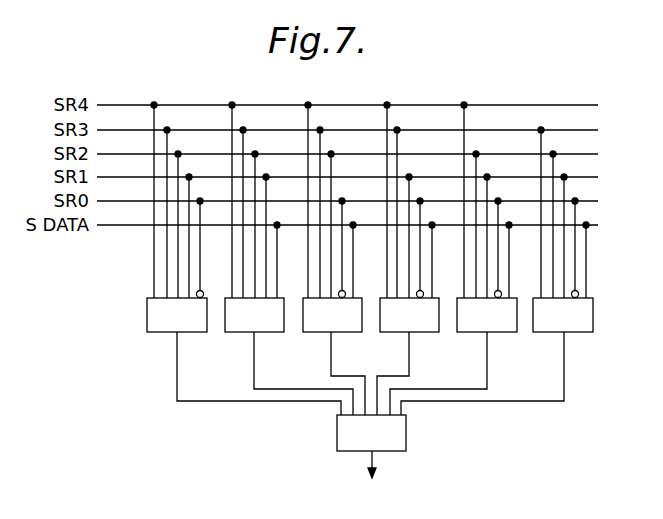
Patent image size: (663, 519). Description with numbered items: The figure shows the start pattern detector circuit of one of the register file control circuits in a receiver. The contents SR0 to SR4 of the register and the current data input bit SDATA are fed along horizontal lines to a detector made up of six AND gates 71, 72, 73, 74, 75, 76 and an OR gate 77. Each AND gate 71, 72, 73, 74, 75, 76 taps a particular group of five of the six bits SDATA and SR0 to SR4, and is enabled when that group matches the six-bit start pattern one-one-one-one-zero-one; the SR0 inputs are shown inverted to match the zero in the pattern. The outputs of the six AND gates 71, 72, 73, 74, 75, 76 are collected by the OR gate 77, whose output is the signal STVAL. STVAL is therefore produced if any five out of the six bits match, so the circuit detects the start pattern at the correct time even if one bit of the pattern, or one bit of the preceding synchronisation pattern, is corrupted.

The AND gate 71 is at (192, 325).
The AND gate 72 is at (270, 325).
The AND gate 73 is at (348, 325).
The AND gate 74 is at (425, 325).
The AND gate 75 is at (502, 325).
The AND gate 76 is at (578, 325).
The OR gate 77 is at (406, 431).